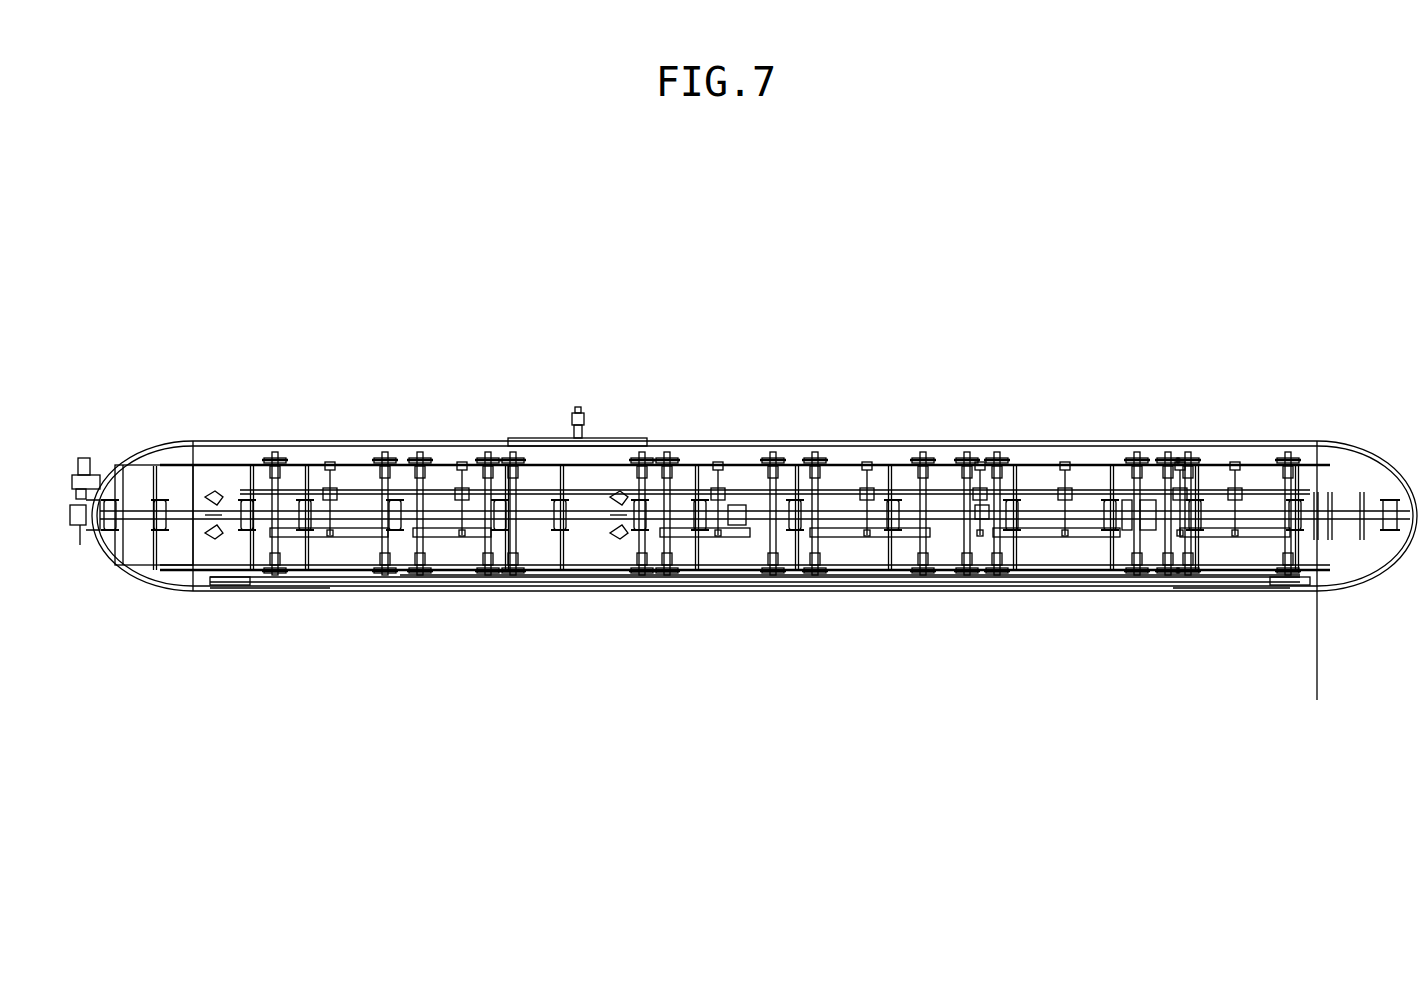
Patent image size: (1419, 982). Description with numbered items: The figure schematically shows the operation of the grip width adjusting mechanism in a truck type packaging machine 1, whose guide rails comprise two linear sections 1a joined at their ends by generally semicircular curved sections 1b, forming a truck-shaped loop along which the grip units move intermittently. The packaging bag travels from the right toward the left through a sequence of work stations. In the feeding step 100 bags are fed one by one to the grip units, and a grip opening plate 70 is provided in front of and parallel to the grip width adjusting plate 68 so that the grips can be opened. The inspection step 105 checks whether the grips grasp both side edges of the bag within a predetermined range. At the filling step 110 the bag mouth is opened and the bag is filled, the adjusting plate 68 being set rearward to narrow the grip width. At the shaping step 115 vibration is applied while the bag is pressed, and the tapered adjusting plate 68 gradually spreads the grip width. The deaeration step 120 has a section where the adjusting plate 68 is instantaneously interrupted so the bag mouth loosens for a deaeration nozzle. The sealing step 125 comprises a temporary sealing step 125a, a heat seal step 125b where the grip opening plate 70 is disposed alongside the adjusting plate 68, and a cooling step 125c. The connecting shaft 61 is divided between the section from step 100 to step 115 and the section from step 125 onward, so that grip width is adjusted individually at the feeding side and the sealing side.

The packaging machine 1 is at (243, 411).
The linear sections 1a is at (265, 446).
The curved sections 1b is at (152, 448).
The connecting shaft 61 is at (430, 493).
The grip width adjusting plate 68 is at (890, 581).
The grip opening plate 70 is at (245, 586).
The feeding step 100 is at (1173, 695).
The inspection step 105 is at (1173, 600).
The filling step 110 is at (962, 600).
The shaping step 115 is at (790, 600).
The deaeration step 120 is at (572, 600).
The sealing step 125 is at (507, 600).
The temporary sealing step 125a is at (458, 558).
The heat seal step 125b is at (402, 600).
The cooling step 125c is at (305, 600).